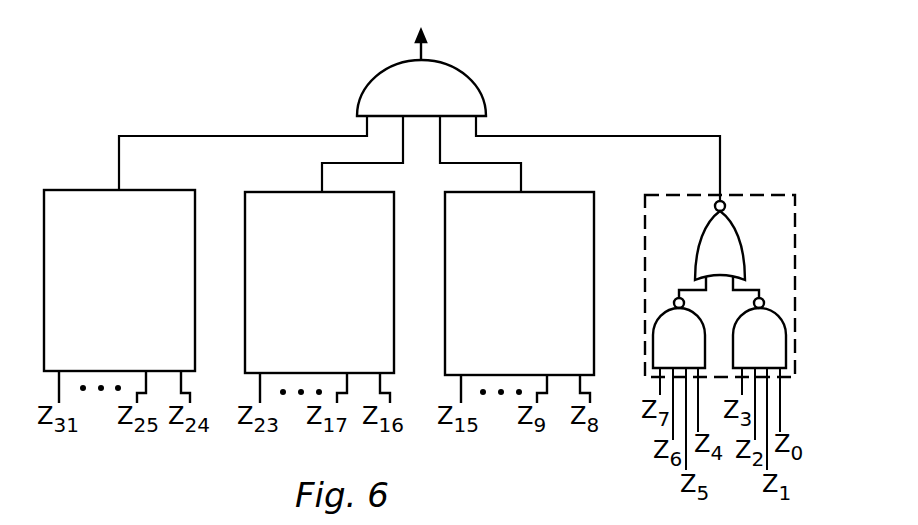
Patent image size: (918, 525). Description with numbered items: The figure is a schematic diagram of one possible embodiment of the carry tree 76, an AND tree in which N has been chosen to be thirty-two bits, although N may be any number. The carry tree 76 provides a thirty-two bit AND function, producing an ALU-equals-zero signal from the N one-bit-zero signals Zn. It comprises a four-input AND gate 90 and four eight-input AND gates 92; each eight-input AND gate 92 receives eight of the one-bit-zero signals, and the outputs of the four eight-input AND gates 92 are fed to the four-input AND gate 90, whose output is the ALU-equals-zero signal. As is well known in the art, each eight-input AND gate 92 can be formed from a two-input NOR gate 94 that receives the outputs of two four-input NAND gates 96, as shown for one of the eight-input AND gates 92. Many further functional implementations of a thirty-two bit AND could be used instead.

The carry tree 76 is at (200, 97).
The four-input AND gate 90 is at (400, 106).
The eight-input AND gate 92 is at (140, 278).
The two-input NOR gate 94 is at (736, 273).
The four-input NAND gate 96 is at (661, 361).